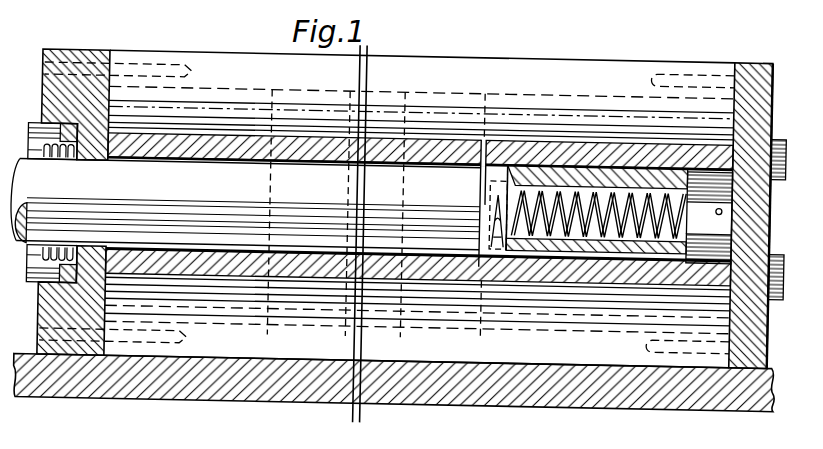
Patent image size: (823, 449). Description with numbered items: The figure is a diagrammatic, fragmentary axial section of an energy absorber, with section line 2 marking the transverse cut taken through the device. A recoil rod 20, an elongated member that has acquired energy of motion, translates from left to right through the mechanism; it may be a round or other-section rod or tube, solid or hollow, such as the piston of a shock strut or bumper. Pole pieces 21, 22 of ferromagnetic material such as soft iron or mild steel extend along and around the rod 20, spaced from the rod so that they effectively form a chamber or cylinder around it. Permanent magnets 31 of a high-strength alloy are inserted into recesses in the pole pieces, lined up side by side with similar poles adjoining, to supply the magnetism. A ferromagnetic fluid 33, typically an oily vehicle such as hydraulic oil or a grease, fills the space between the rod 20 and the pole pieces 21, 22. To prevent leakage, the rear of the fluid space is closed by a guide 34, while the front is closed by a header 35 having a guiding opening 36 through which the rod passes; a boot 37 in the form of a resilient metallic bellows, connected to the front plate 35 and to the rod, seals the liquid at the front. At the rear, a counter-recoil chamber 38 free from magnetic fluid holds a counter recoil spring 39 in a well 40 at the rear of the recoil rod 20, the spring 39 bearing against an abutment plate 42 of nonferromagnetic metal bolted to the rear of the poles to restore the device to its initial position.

The section line 2- 2 is at (189, 32).
The recoil rod 20 is at (245, 204).
The pole piece 21 is at (432, 149).
The pole piece 22 is at (472, 265).
The permanent magnets 31 is at (248, 98).
The ferromagnetic fluid 33 is at (285, 152).
The guide 34 is at (492, 159).
The header 35 is at (54, 89).
The guiding opening 36 is at (93, 160).
The boot 37 is at (47, 278).
The counter-recoil chamber 38 is at (596, 157).
The counter recoil spring 39 is at (492, 194).
The well 40 is at (646, 248).
The abutment plate 42 is at (767, 119).